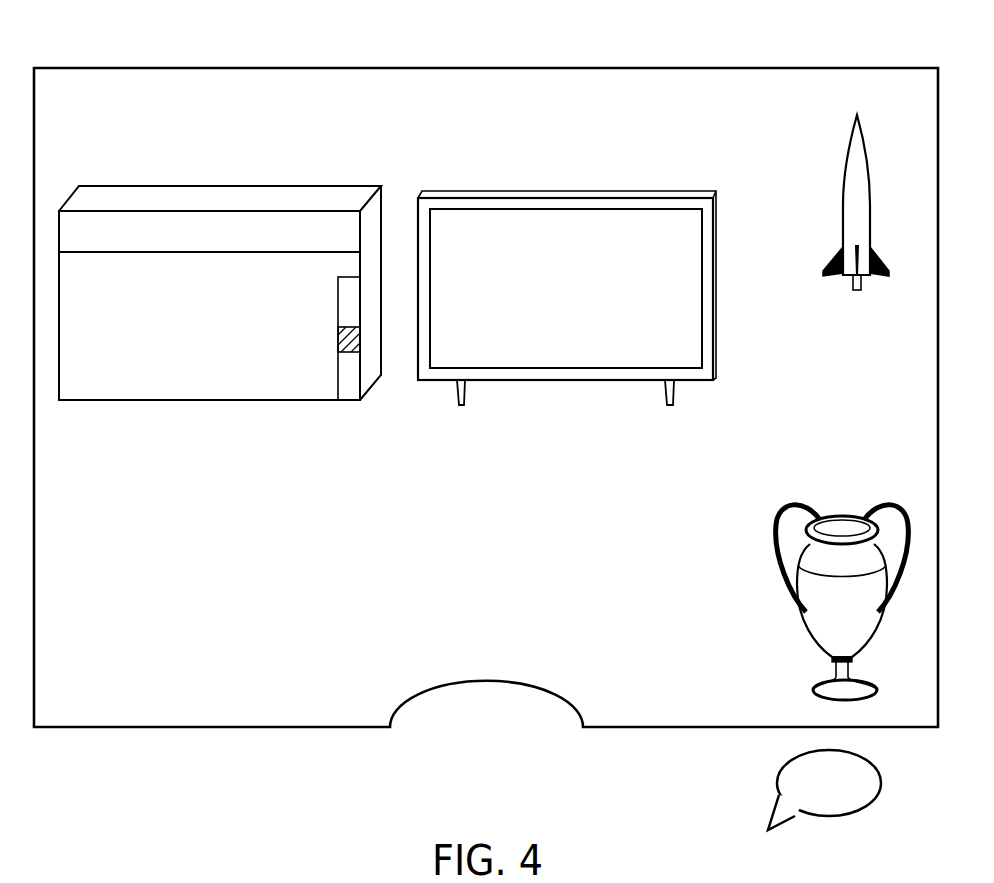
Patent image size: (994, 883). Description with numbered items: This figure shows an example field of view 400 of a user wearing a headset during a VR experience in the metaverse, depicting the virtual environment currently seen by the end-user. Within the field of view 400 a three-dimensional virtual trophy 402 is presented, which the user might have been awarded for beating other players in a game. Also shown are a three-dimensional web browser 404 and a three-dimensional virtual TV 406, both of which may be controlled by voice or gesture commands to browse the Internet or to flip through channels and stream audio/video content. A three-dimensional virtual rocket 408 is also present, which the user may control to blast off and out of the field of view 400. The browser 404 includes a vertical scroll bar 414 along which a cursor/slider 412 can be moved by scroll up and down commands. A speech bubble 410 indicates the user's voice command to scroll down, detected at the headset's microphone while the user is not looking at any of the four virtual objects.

The field of view 400 is at (488, 68).
The virtual trophy 402 is at (840, 517).
The web browser 404 is at (231, 186).
The virtual TV 406 is at (570, 191).
The virtual rocket 408 is at (847, 150).
The speech bubble 410 is at (777, 775).
The cursor/slider 412 is at (338, 338).
The vertical scroll bar 414 is at (338, 380).